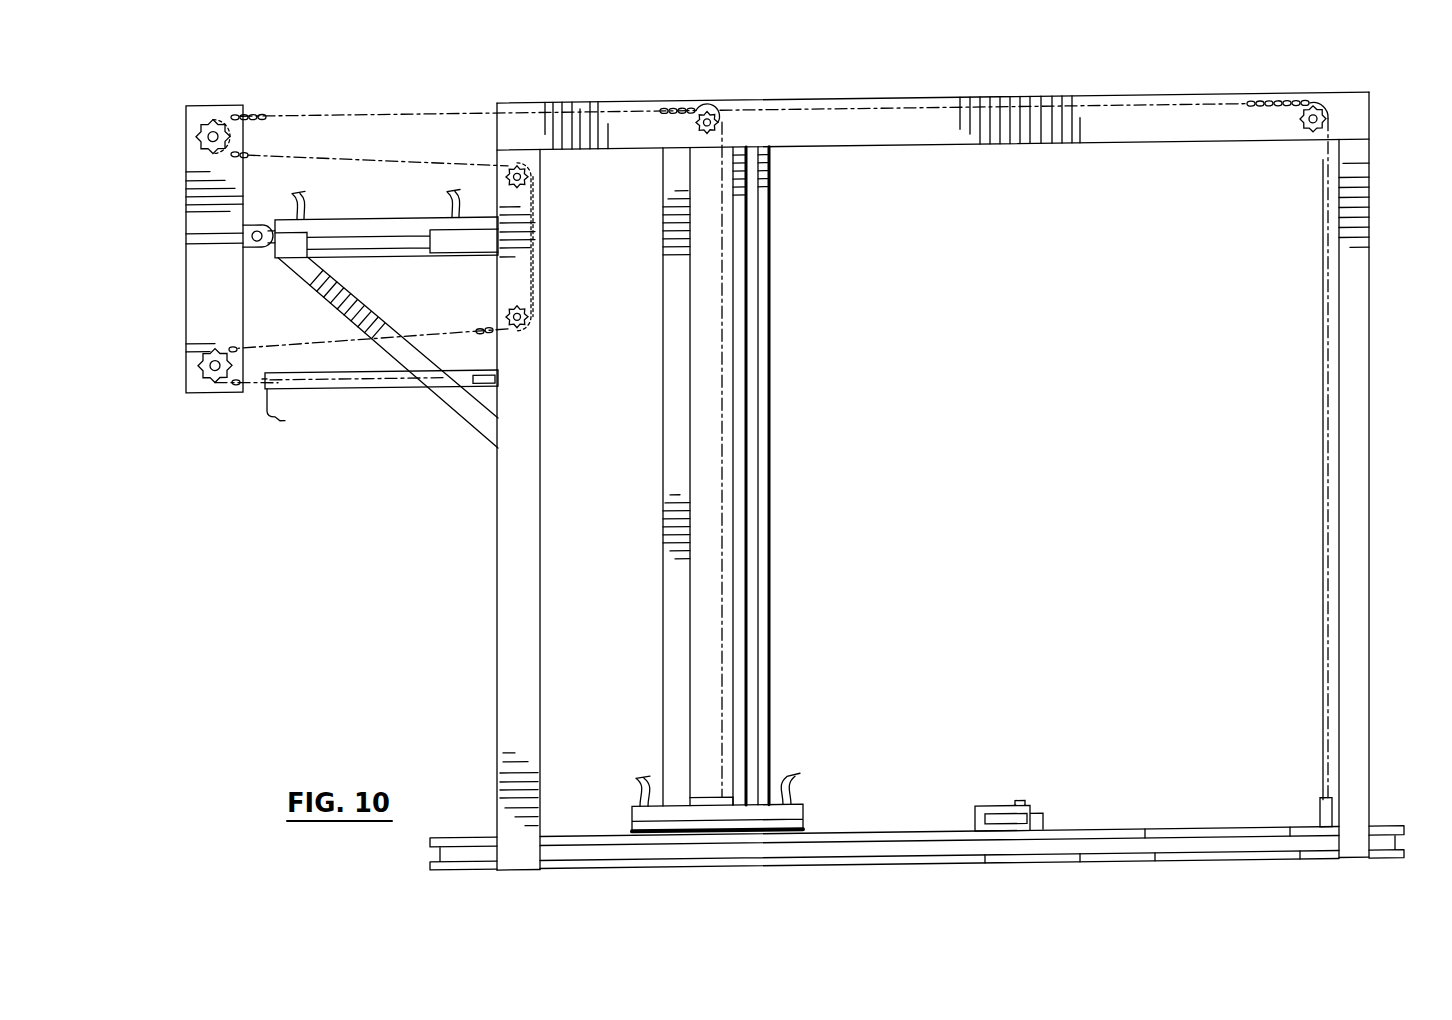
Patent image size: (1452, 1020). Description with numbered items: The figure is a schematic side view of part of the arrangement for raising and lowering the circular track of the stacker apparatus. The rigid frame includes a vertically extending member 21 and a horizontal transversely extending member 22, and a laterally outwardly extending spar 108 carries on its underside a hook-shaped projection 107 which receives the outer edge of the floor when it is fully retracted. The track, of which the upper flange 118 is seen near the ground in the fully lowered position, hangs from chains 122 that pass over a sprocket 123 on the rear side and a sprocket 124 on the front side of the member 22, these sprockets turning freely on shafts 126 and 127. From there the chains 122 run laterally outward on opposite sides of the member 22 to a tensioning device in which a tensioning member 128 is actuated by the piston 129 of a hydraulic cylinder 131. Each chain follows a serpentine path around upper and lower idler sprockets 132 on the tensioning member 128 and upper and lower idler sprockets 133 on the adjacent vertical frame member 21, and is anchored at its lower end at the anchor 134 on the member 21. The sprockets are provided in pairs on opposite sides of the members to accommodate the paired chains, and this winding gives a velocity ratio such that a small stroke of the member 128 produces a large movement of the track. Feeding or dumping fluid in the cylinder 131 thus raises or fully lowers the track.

The vertically extending member 21 is at (528, 440).
The transversely extending member 22 is at (937, 117).
The hook-shaped projection 107 is at (284, 416).
The laterally outwardly extending spar 108 is at (395, 390).
The upper flange 118 is at (1152, 836).
The chain 122 is at (722, 219).
The sprocket 123 is at (703, 114).
The sprocket 124 is at (1324, 110).
The shaft 126 is at (725, 120).
The shaft 127 is at (1297, 107).
The tensioning member 128 is at (232, 313).
The piston 129 is at (265, 252).
The hydraulic cylinder 131 is at (388, 228).
The idler sprocket 132 is at (226, 128).
The idler sprocket 133 is at (533, 190).
The chain anchor 134 is at (487, 383).